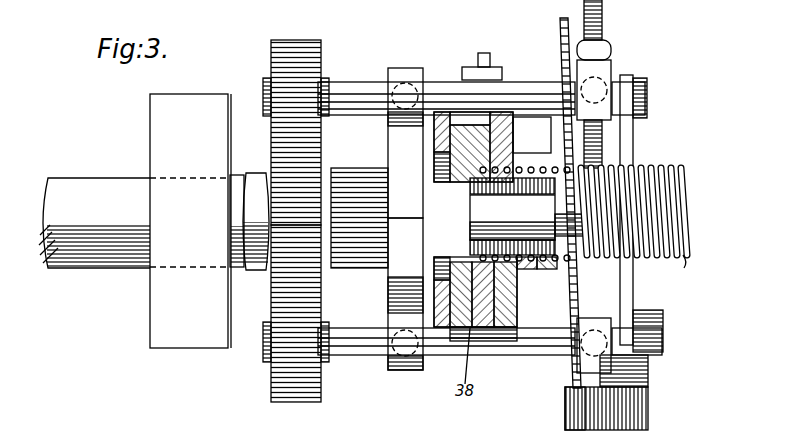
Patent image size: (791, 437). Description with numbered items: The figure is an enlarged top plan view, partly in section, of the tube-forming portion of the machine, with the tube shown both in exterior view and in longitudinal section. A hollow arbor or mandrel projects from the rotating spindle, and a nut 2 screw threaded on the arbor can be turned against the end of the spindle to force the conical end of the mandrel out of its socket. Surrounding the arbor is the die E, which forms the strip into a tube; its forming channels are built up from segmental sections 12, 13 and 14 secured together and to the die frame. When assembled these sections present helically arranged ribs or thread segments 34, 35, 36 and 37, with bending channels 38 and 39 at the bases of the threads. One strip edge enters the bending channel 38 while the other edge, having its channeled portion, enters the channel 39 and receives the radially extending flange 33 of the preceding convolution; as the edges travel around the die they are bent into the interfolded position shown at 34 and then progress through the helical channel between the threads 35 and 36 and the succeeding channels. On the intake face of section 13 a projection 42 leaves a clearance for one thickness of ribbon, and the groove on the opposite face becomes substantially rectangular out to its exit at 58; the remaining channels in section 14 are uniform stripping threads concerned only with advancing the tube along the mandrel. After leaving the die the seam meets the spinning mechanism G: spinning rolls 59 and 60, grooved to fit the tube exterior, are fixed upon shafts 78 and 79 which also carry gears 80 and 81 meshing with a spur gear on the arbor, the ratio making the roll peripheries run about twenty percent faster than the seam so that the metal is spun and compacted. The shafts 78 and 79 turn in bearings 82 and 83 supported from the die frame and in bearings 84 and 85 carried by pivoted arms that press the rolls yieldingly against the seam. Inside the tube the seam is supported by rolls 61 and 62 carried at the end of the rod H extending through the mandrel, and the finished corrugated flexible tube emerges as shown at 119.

The nut 2 is at (252, 178).
The segmental die section 12 is at (462, 126).
The segmental die section 13 is at (492, 130).
The segmental die section 14 is at (522, 118).
The radially extending flange 33 is at (470, 228).
The thread segment 34 is at (484, 330).
The thread segment 35 is at (512, 322).
The thread segment 36 is at (508, 268).
The thread segment 37 is at (542, 268).
The bending channel 38 is at (512, 217).
The bending channel 39 is at (474, 328).
The projection 42 is at (456, 328).
The exit of groove 58 is at (555, 140).
The spinning roll 59 is at (562, 40).
The spinning roll 60 is at (573, 406).
The roll 61 is at (570, 200).
The roll 62 is at (570, 226).
The shaft 78 is at (345, 96).
The shaft 79 is at (346, 346).
The gear 80 is at (300, 46).
The gear 81 is at (288, 378).
The bearing 82 is at (396, 72).
The bearing 83 is at (401, 368).
The bearing 84 is at (608, 76).
The bearing 85 is at (614, 336).
The corrugated flexible tube 119 is at (663, 262).
The die E is at (530, 135).
The seam spinning mechanism G is at (616, 172).
The rod H is at (507, 213).